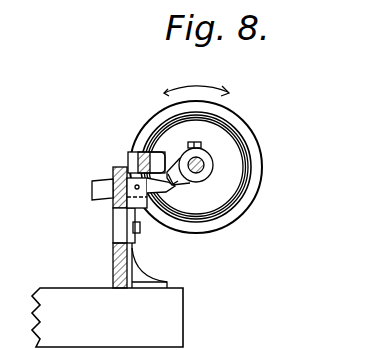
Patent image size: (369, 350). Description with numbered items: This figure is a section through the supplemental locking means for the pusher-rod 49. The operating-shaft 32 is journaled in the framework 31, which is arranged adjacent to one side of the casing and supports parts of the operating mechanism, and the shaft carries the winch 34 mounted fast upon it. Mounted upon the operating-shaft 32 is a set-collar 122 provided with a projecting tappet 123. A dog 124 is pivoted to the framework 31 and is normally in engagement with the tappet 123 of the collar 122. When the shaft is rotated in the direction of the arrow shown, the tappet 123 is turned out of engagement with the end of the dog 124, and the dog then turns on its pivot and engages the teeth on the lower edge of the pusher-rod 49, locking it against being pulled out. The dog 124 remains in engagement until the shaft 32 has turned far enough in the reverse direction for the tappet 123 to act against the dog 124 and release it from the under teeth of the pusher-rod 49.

The winch 34 is at (233, 118).
The framework 31 is at (113, 258).
The pusher-rod 49 is at (128, 152).
The dog 124 is at (105, 190).
The set-collar 122 is at (180, 157).
The tappet 123 is at (174, 176).
The operating-shaft 32 is at (200, 168).